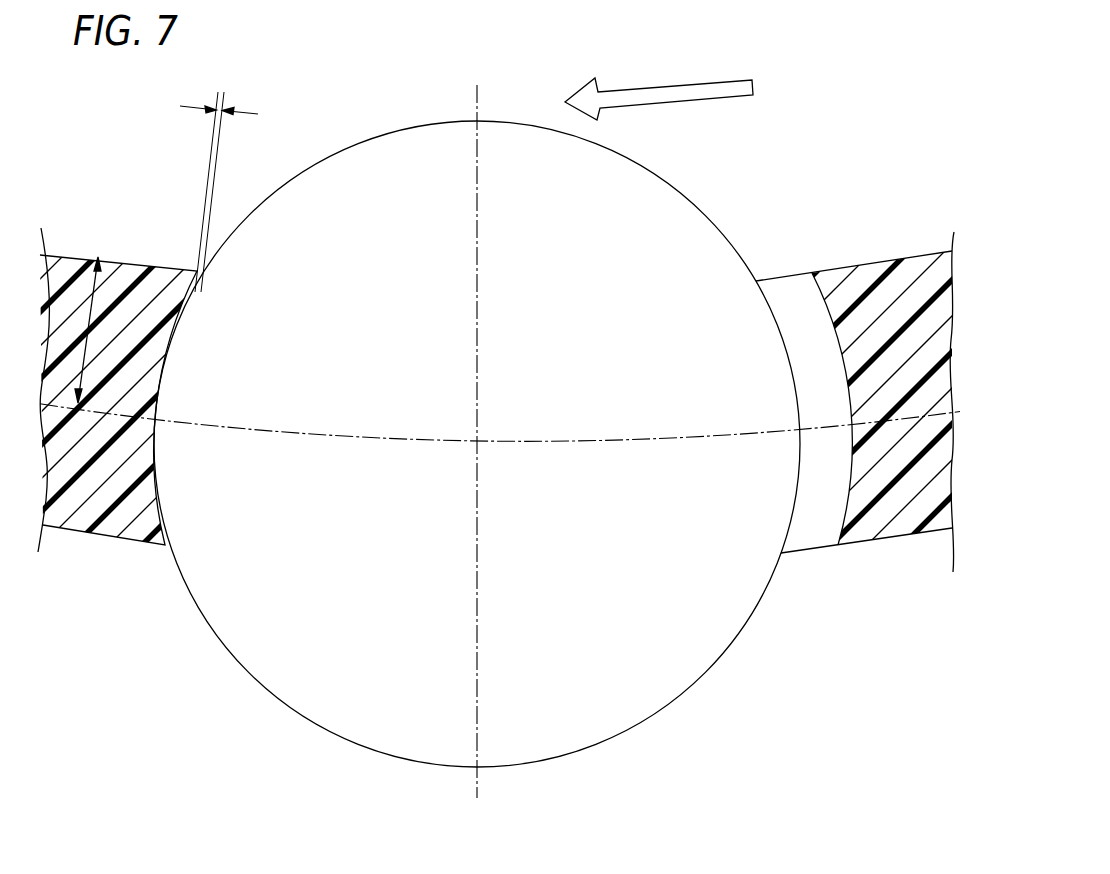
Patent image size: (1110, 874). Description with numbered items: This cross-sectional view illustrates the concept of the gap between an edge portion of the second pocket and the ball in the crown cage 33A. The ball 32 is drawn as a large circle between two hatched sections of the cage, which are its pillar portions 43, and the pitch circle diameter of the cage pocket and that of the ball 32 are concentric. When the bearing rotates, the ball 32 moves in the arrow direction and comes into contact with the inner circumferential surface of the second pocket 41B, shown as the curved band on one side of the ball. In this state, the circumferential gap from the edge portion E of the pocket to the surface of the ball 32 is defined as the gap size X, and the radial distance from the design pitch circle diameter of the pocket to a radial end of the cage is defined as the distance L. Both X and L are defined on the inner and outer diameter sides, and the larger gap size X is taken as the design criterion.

The ball 32 is at (352, 178).
The crown cage 33A is at (881, 258).
The second pocket 41B is at (852, 462).
The pillar portion 43 is at (88, 513).
The distance L is at (92, 312).
The edge portion E is at (197, 269).
The gap size X is at (219, 189).